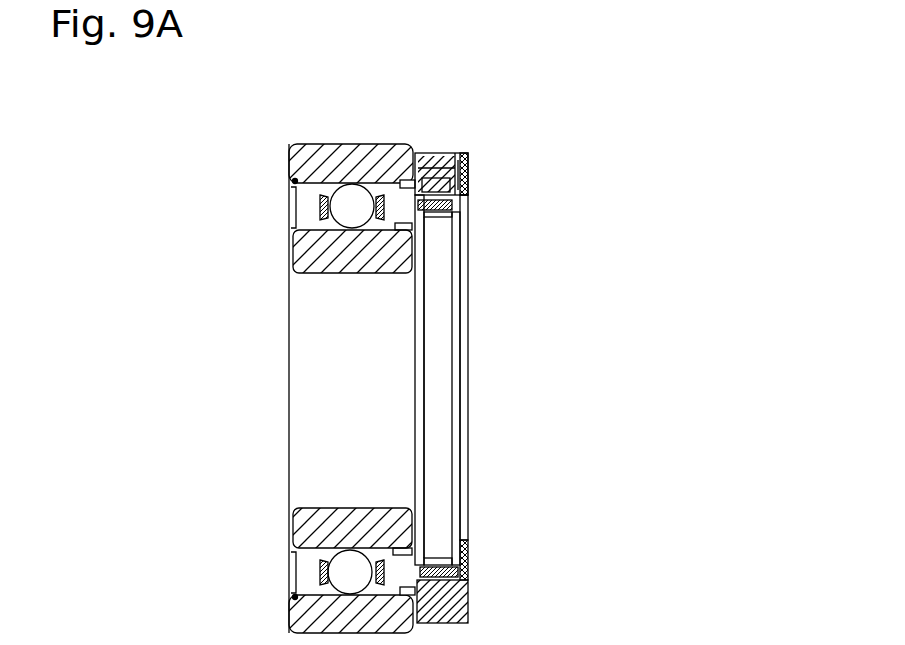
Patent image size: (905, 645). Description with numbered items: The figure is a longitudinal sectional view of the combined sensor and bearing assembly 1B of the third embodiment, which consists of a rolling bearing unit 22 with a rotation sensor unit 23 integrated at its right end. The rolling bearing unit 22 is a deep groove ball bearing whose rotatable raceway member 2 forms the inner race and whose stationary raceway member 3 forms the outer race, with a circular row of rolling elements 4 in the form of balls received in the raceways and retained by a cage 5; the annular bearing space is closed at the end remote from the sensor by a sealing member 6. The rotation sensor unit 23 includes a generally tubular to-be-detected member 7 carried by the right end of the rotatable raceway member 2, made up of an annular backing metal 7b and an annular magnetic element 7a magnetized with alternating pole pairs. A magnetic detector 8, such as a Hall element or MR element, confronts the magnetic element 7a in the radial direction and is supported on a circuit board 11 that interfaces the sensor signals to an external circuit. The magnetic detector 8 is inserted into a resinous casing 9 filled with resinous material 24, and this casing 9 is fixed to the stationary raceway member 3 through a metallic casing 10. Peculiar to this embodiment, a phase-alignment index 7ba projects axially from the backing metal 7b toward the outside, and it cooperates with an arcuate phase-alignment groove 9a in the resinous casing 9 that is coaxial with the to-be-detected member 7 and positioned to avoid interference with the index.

The combined sensor and bearing assembly 1B is at (215, 173).
The rolling bearing unit 22 is at (287, 156).
The stationary raceway member 3 is at (327, 160).
The rotatable raceway member 2 is at (307, 265).
The rolling elements 4 is at (351, 215).
The cage 5 is at (379, 192).
The sealing member 6 is at (290, 205).
The metallic casing 10 is at (425, 178).
The rotation sensor unit 23 is at (603, 140).
The magnetic detector 8 is at (468, 176).
The resinous casing 9 is at (428, 158).
The resinous material 24 is at (452, 155).
The circuit board 11 is at (468, 163).
The to-be-detected member 7 is at (550, 223).
The annular magnetic element 7a is at (461, 212).
The annular backing metal 7b is at (461, 237).
The phase-alignment index 7ba is at (462, 562).
The phase-alignment groove 9a is at (466, 576).